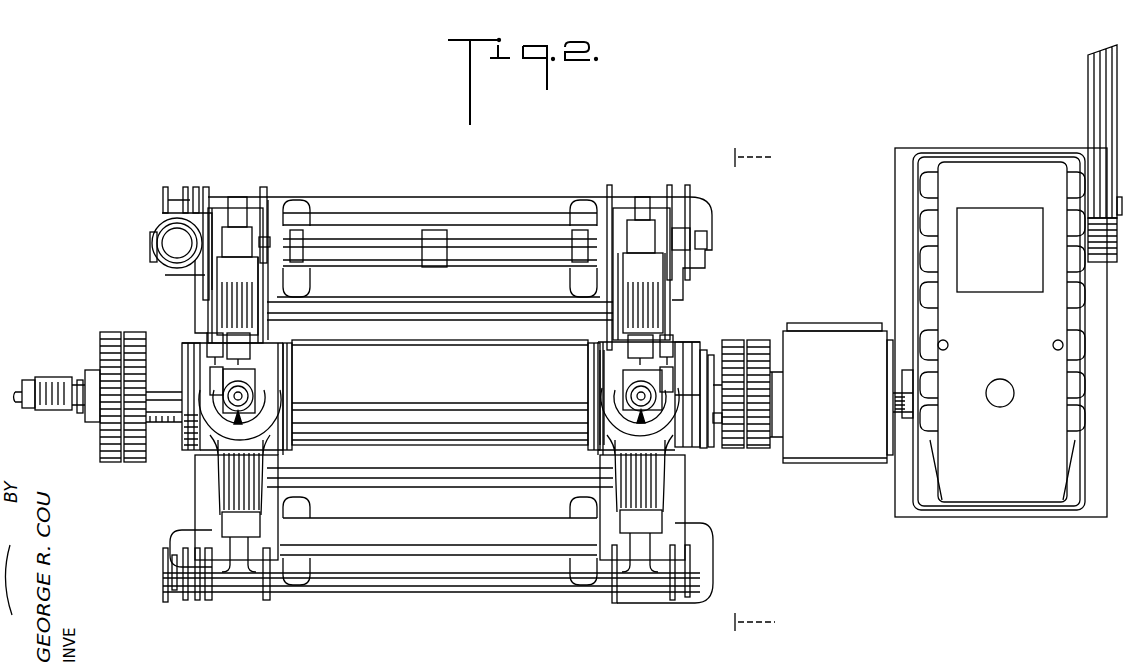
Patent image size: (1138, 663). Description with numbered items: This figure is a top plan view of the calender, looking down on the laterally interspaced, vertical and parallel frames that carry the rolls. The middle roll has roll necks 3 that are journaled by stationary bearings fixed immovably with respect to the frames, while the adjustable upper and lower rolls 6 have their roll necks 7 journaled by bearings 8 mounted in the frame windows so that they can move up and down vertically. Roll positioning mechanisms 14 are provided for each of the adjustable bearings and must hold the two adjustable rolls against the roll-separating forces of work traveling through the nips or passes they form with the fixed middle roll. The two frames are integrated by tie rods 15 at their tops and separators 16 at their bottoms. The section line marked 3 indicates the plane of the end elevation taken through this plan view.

The roll neck 3 is at (769, 392).
The upper and lower rolls 6 is at (400, 381).
The roll neck 7 is at (284, 380).
The bearing 8 is at (278, 447).
The roll positioning mechanism 14 is at (282, 408).
The tie rod 15 is at (340, 307).
The separator 16 is at (648, 314).